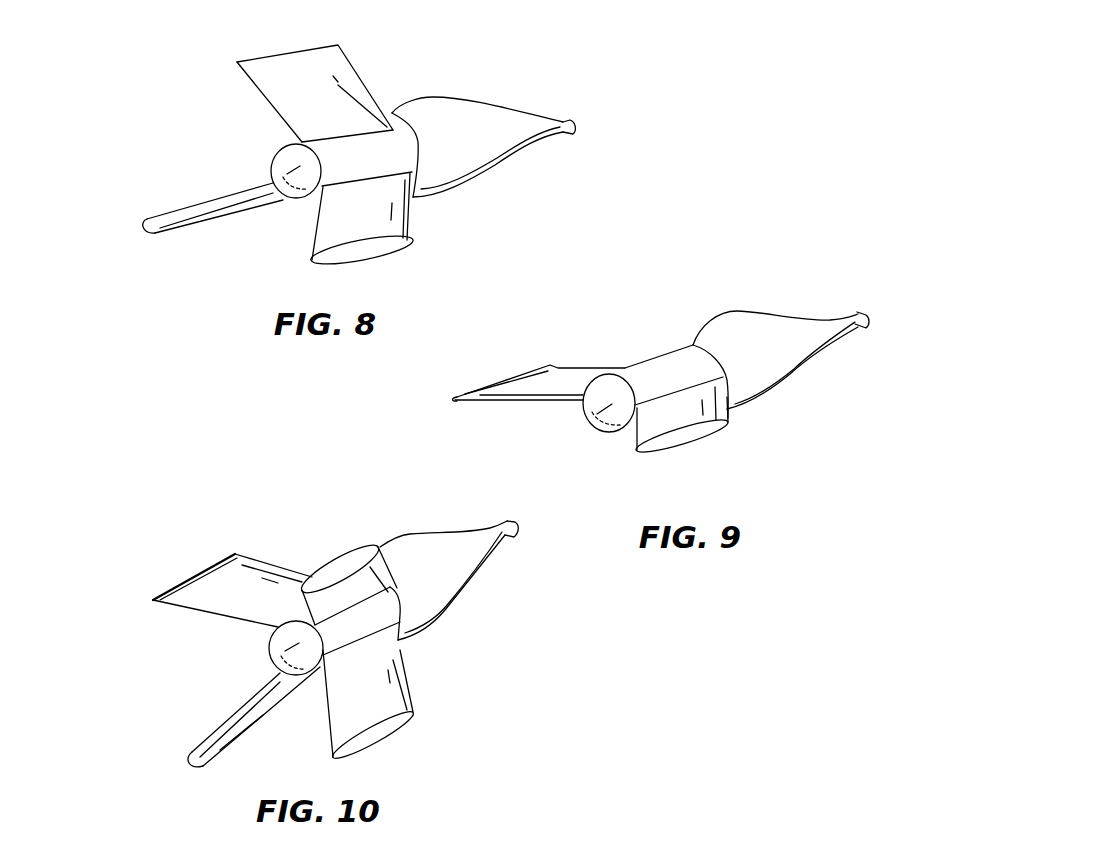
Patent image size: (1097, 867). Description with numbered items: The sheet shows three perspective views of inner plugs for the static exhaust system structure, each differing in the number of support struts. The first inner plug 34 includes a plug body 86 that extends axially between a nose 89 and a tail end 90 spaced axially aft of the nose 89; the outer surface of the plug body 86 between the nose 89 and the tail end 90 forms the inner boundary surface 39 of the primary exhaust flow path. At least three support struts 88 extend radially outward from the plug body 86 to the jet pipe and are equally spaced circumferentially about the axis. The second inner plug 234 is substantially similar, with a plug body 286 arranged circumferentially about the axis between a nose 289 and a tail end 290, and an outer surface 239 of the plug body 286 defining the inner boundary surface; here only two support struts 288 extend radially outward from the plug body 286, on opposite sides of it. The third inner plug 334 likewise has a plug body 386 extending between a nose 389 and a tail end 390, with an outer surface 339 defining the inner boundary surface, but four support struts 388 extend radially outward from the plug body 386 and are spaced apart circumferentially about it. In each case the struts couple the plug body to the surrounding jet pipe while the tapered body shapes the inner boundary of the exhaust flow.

In FIG. 8, the inner plug 34 is at (374, 151).
In FIG. 8, the plug body 86 is at (295, 138).
In FIG. 8, the support struts 88 is at (383, 70).
In FIG. 8, the nose 89 is at (272, 176).
In FIG. 8, the inner boundary surface 39 is at (452, 122).
In FIG. 8, the tail end 90 is at (582, 125).
In FIG. 9, the inner plug 234 is at (706, 332).
In FIG. 9, the plug body 286 is at (632, 315).
In FIG. 9, the support struts 288 is at (592, 374).
In FIG. 9, the nose 289 is at (608, 409).
In FIG. 9, the outer surface 239 is at (742, 350).
In FIG. 9, the tail end 290 is at (870, 318).
In FIG. 10, the inner plug 334 is at (322, 603).
In FIG. 10, the plug body 386 is at (487, 586).
In FIG. 10, the support struts 388 is at (357, 526).
In FIG. 10, the nose 389 is at (295, 643).
In FIG. 10, the outer surface 339 is at (418, 574).
In FIG. 10, the tail end 390 is at (519, 533).